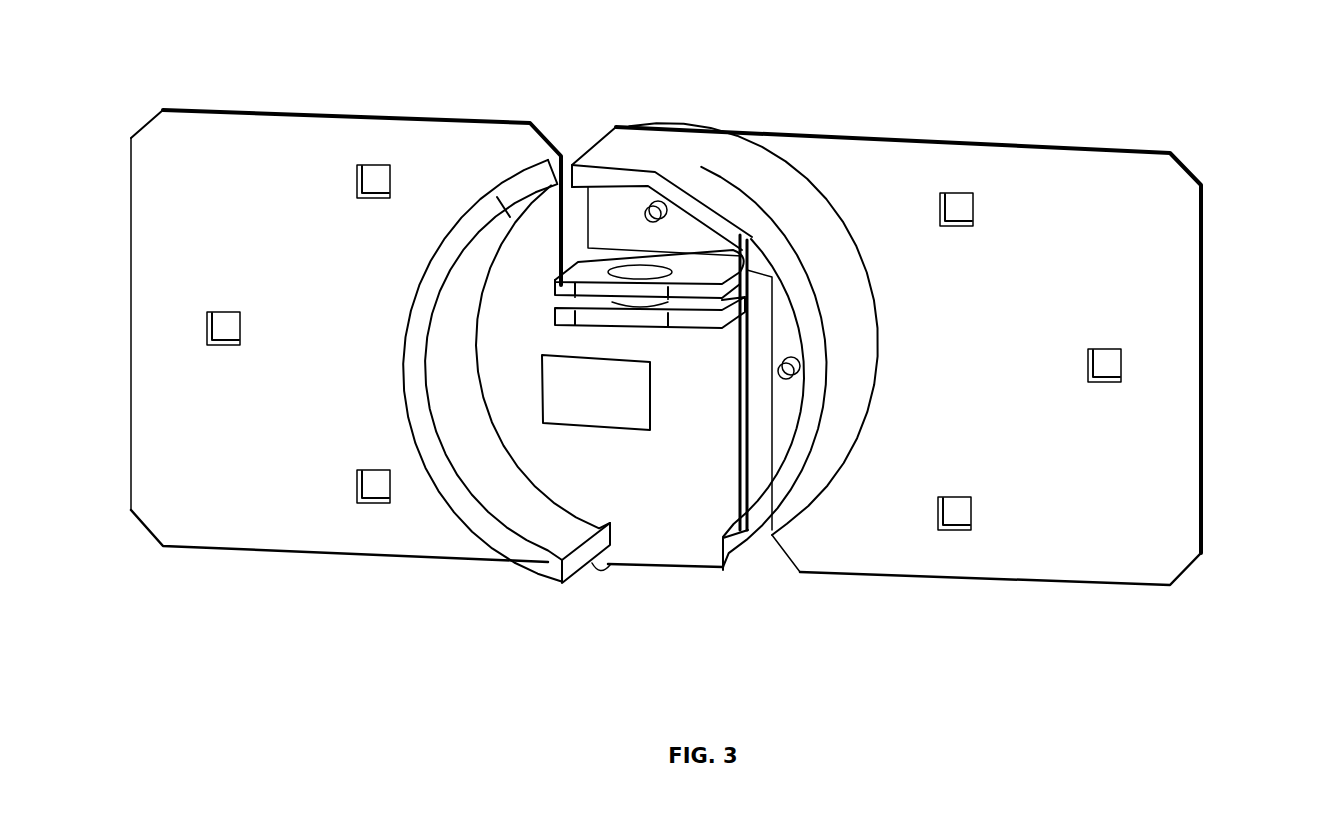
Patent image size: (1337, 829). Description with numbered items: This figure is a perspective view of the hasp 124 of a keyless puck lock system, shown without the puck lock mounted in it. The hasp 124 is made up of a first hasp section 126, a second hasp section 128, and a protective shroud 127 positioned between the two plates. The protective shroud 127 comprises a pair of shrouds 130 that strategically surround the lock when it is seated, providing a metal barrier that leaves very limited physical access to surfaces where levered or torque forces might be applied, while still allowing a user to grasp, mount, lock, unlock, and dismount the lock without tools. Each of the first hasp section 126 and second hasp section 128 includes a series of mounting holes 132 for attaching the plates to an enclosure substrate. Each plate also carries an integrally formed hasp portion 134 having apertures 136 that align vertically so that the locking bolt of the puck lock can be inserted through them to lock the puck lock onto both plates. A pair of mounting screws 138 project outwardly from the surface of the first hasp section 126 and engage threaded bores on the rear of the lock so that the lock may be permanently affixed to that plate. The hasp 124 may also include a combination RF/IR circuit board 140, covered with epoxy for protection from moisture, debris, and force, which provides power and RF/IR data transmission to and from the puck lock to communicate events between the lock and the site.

The hasp 124 is at (1233, 187).
The first hasp section 126 is at (1040, 150).
The protective shroud 127 is at (828, 463).
The second hasp section 128 is at (233, 105).
The shrouds 130 is at (433, 262).
The mounting holes 132 is at (372, 165).
The hasp portion 134 is at (748, 235).
The apertures 136 is at (655, 265).
The mounting screws 138 is at (645, 192).
The combination RF/IR circuit board 140 is at (567, 402).